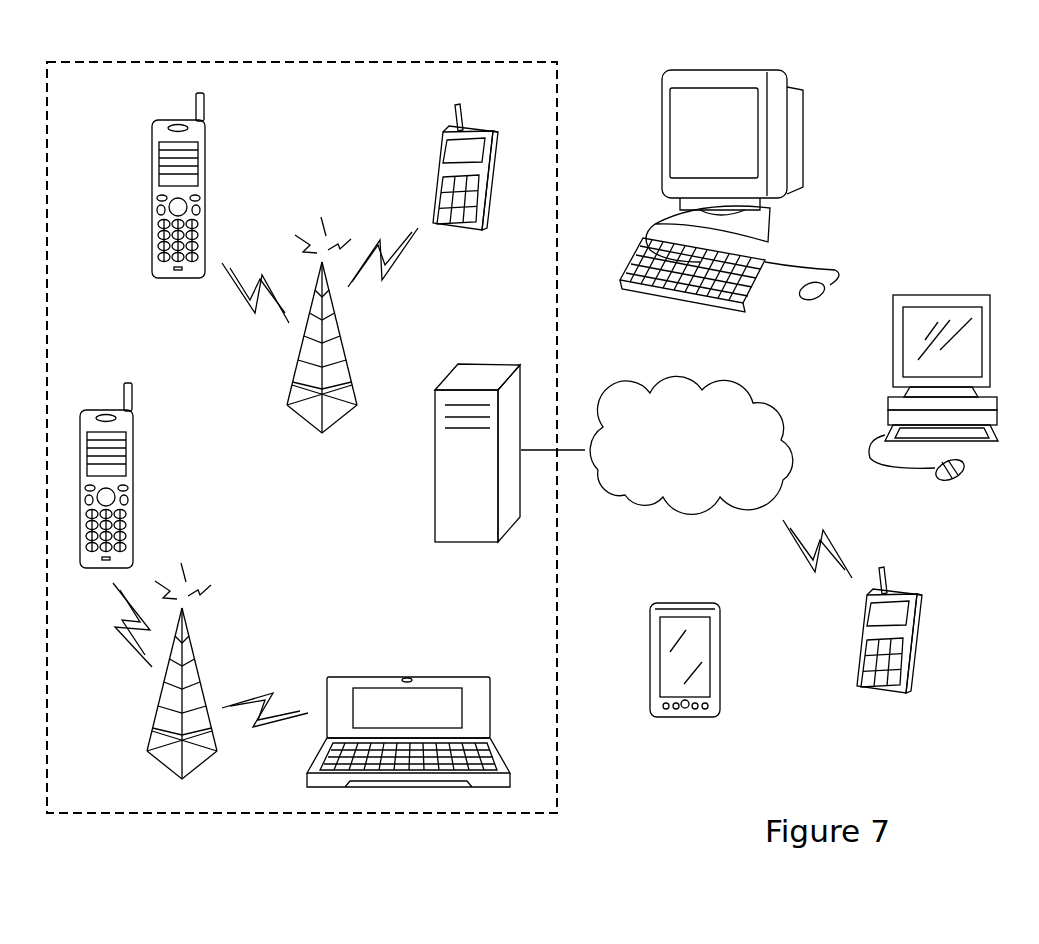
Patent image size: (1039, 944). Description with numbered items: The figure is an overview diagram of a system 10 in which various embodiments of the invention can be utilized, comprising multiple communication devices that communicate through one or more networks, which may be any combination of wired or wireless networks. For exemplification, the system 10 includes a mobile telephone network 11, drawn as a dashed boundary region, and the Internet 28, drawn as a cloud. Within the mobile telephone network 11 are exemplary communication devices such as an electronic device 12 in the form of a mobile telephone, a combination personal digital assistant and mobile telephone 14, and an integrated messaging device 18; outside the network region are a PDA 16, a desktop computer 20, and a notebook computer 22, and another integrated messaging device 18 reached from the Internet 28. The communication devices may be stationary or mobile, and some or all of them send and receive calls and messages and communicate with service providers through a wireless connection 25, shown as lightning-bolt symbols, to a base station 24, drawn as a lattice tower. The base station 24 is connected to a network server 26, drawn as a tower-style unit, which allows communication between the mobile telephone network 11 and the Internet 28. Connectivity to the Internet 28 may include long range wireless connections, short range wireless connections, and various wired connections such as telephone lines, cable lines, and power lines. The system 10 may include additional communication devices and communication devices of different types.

The system 10 is at (983, 550).
The mobile telephone network 11 is at (86, 101).
The electronic device 12 is at (207, 197).
The combination personal digital assistant (PDA) and mobile telephone 14 is at (407, 680).
The PDA 16 is at (720, 657).
The integrated messaging device (IMD) 18 is at (437, 178).
The desktop computer 20 is at (806, 124).
The notebook computer 22 is at (943, 295).
The base station 24 is at (342, 332).
The wireless connection 25 is at (127, 658).
The network server 26 is at (435, 463).
The Internet 28 is at (730, 380).